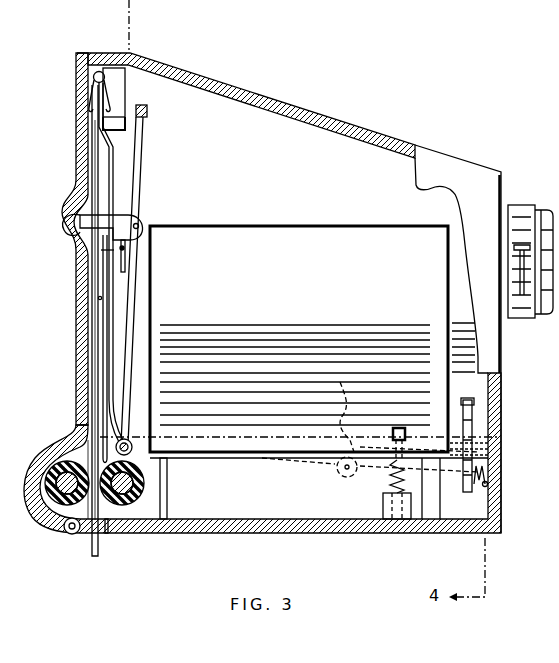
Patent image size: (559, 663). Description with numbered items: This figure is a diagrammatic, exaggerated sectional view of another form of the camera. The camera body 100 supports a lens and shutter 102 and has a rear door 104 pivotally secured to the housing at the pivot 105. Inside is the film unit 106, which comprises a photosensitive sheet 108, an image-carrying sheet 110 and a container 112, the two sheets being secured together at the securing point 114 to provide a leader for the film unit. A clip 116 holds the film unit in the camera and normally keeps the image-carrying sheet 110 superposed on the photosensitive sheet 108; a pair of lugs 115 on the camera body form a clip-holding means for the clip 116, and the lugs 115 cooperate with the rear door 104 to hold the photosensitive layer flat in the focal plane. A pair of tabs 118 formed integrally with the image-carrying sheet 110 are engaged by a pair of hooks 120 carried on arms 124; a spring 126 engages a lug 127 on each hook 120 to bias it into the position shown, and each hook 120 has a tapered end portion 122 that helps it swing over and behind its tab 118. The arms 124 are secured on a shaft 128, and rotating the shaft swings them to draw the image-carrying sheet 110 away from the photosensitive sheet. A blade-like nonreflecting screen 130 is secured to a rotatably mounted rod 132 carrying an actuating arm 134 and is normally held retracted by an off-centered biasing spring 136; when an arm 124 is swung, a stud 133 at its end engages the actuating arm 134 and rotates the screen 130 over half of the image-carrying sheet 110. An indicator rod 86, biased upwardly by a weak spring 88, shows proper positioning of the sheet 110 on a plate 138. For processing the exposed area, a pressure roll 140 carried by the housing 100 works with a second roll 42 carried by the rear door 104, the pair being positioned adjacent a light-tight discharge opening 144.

The roller 42 is at (52, 460).
The rod 86 is at (402, 427).
The weak spring 88 is at (382, 482).
The camera body 100 is at (340, 123).
The lens and shutter 102 is at (517, 208).
The rear door 104 is at (81, 341).
The pivot 105 is at (72, 534).
The film unit 106 is at (119, 161).
The photosensitive sheet 108 is at (100, 298).
The image-carrying sheet 110 is at (110, 313).
The container 112 is at (85, 402).
The securing point 114 is at (100, 540).
The lugs 115 is at (117, 92).
The clip 116 is at (92, 96).
The tabs 118 is at (110, 251).
The hooks 120 is at (118, 214).
The tapered end portion 122 is at (80, 225).
The arms 124 is at (131, 292).
The spring 126 is at (130, 263).
The lug 127 is at (140, 242).
The shaft 128 is at (127, 438).
The blade-like member 130 is at (330, 284).
The rotatably mounted rod 132 is at (478, 452).
The stud 133 is at (147, 111).
The actuating arm 134 is at (474, 405).
The off-centered biasing spring 136 is at (487, 477).
The plate 138 is at (256, 447).
The pressure roll 140 is at (128, 508).
The light-tight discharge opening 144 is at (84, 545).